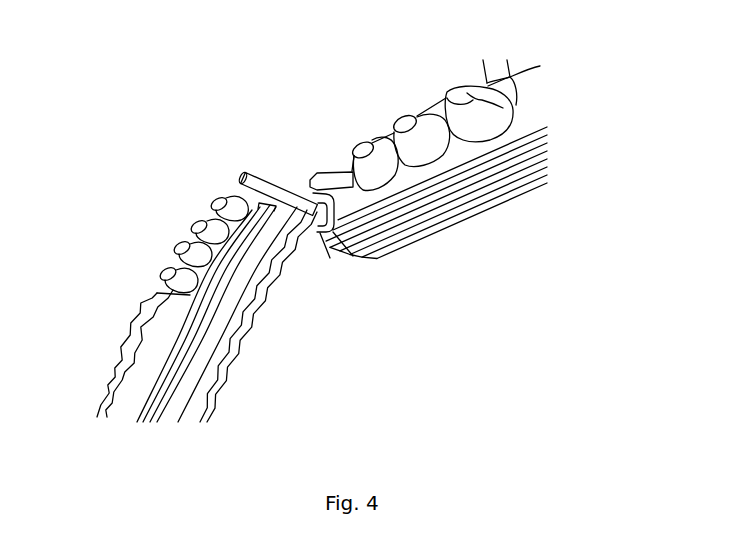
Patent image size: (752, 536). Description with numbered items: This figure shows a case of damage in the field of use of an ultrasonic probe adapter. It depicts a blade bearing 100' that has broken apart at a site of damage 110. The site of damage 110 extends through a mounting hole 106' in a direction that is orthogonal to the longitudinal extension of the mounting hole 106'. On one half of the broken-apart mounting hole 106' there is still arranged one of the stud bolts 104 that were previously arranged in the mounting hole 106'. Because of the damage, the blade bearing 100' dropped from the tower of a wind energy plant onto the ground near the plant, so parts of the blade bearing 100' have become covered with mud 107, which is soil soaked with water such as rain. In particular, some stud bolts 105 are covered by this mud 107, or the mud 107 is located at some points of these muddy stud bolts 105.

The blade bearing 100' is at (479, 132).
The stud bolt 104 is at (240, 172).
The muddy stud bolts 105 is at (213, 203).
The mounting hole 106' is at (337, 137).
The mud 107 is at (135, 358).
The site of damage 110 is at (300, 186).